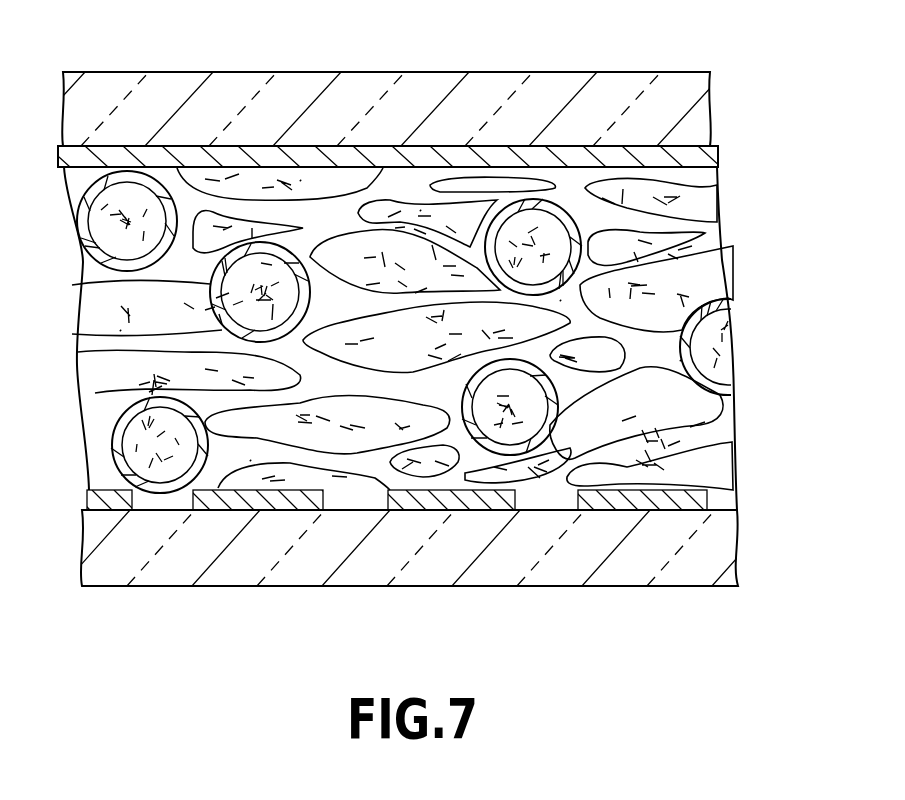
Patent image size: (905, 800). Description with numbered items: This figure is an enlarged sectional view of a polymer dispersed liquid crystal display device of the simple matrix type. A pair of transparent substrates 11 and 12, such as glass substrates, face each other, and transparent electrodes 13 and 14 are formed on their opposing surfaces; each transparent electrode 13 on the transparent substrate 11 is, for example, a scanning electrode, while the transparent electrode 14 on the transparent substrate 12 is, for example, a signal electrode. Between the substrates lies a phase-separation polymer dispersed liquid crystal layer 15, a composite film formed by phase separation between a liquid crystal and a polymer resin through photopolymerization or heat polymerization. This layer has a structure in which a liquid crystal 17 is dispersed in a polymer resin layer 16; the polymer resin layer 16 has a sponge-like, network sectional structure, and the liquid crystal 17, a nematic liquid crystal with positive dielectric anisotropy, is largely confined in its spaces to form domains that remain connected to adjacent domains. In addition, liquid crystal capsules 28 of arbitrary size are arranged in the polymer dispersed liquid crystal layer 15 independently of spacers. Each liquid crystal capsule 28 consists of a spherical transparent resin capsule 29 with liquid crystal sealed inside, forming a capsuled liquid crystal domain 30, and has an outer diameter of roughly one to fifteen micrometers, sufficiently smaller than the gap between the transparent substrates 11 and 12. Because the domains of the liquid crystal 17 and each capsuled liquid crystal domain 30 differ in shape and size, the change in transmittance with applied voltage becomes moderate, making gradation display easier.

The transparent substrate 11 is at (690, 100).
The transparent substrate 12 is at (710, 548).
The transparent electrode 13 is at (718, 167).
The transparent electrode 14 is at (610, 510).
The phase-separation polymer dispersed liquid crystal layer 15 is at (744, 333).
The polymer resin layer 16 is at (713, 242).
The liquid crystal 17 is at (733, 280).
The liquid crystal capsule 28 is at (573, 208).
The transparent resin capsule 29 is at (542, 200).
The capsuled liquid crystal domain 30 is at (523, 235).